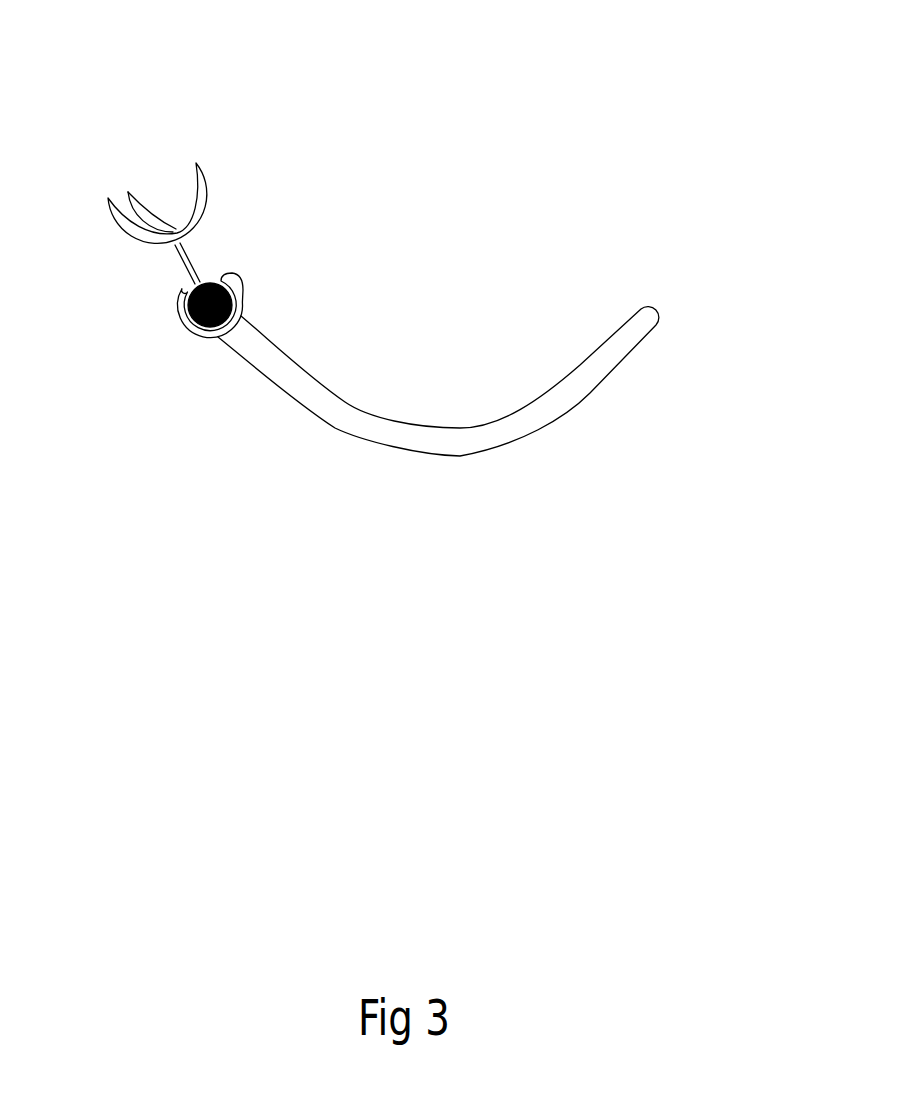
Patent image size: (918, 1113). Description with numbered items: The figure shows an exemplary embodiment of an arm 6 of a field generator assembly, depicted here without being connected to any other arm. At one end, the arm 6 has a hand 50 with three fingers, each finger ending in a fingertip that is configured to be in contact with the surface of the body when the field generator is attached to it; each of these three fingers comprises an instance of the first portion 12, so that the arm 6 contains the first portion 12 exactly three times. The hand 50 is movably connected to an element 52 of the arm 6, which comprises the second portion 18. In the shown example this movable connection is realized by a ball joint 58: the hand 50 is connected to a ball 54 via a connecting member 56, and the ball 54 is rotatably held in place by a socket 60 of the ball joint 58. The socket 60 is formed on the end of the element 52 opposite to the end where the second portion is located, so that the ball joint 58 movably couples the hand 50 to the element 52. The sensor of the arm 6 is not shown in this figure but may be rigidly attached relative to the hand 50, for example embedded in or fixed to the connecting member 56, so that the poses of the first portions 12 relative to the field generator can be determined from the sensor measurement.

The arm 6 is at (716, 95).
The first portion 12 is at (100, 178).
The hand 50 is at (252, 187).
The element 52 is at (343, 415).
The ball 54 is at (172, 294).
The connecting member 56 is at (184, 260).
The ball joint 58 is at (183, 362).
The socket 60 is at (243, 302).
The second portion 18 is at (659, 313).